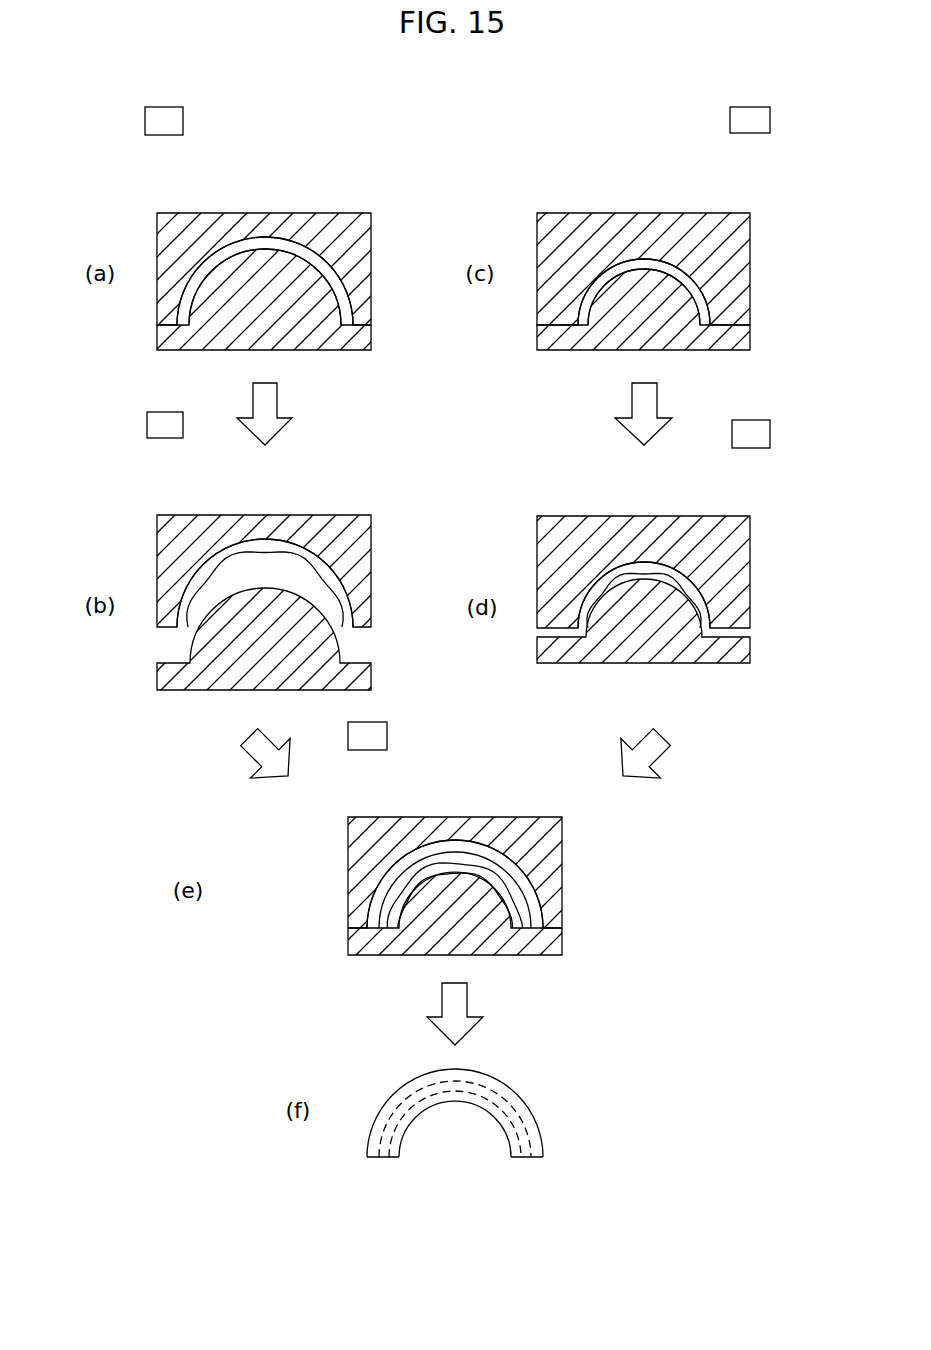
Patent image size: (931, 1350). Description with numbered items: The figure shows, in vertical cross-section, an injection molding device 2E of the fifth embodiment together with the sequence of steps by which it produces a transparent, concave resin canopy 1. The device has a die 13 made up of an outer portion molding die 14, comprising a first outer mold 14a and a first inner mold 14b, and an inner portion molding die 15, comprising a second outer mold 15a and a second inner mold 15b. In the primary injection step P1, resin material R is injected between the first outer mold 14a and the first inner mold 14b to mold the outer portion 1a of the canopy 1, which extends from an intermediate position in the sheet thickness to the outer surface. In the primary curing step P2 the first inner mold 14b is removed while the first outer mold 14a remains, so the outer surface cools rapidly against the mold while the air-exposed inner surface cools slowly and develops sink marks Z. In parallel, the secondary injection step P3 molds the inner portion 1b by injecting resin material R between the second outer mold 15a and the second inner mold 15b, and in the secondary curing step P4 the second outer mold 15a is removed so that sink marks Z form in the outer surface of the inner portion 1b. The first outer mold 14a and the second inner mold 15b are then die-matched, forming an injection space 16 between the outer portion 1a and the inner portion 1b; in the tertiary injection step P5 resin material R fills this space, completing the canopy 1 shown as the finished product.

The injection molding device 2E is at (270, 118).
The die 13 is at (532, 103).
The outer portion molding die 14 is at (343, 144).
The first outer mold 14a is at (365, 213).
The first inner mold 14b is at (372, 328).
The inner portion molding die 15 is at (563, 144).
The second outer mold 15a is at (537, 213).
The second inner mold 15b is at (537, 333).
The outer portion 1a is at (260, 245).
The inner portion 1b is at (640, 262).
The injection space 16 is at (492, 862).
The canopy 1 is at (396, 1092).
The resin material R is at (195, 266).
The sink marks Z is at (215, 568).
The primary injection step P1 is at (196, 184).
The primary curing step P2 is at (198, 487).
The secondary injection step P3 is at (724, 184).
The secondary curing step P4 is at (723, 500).
The tertiary injection step P5 is at (401, 795).